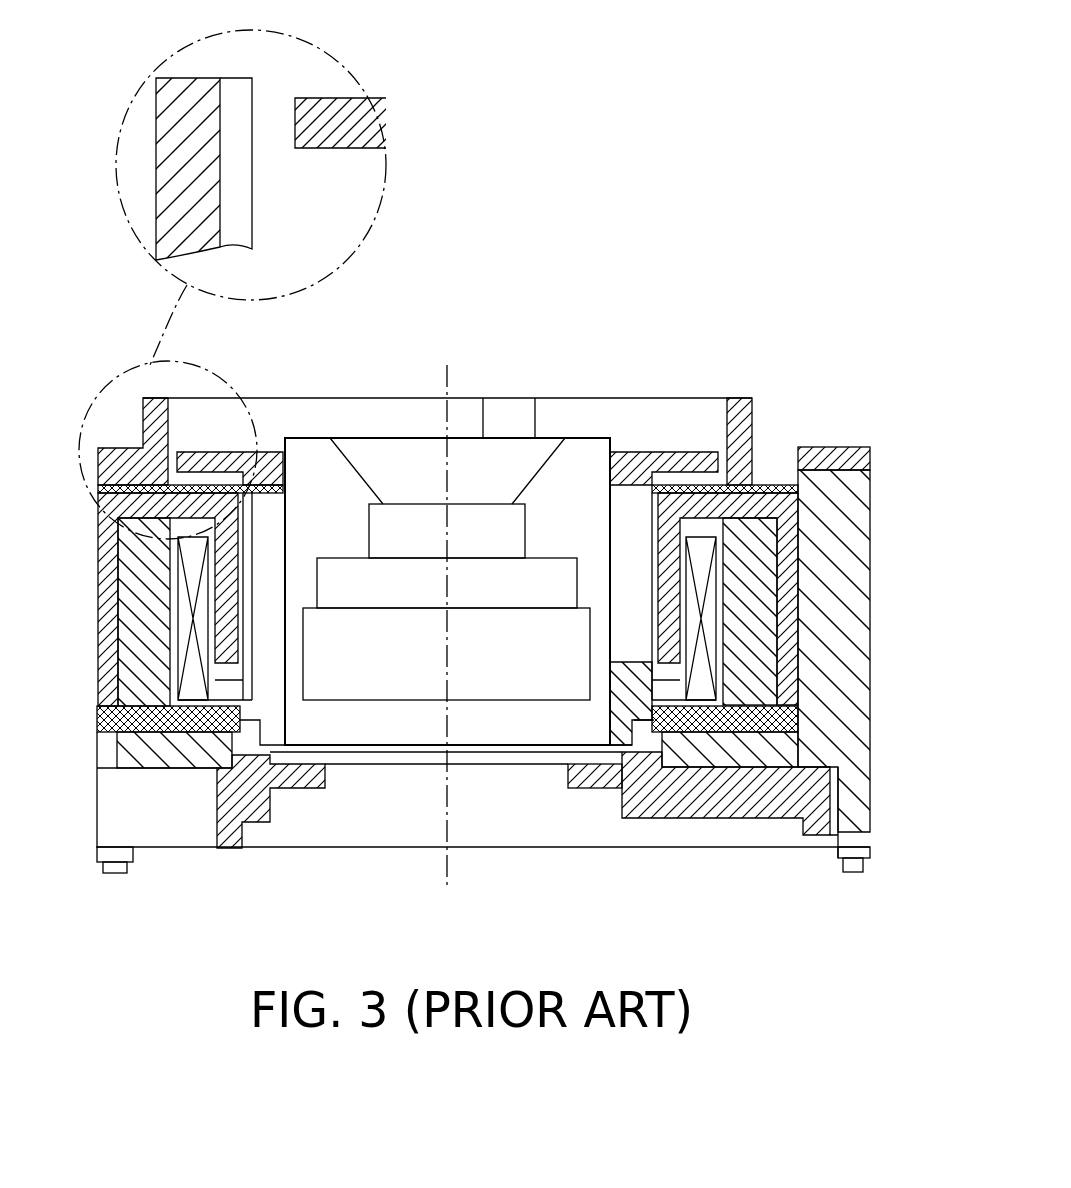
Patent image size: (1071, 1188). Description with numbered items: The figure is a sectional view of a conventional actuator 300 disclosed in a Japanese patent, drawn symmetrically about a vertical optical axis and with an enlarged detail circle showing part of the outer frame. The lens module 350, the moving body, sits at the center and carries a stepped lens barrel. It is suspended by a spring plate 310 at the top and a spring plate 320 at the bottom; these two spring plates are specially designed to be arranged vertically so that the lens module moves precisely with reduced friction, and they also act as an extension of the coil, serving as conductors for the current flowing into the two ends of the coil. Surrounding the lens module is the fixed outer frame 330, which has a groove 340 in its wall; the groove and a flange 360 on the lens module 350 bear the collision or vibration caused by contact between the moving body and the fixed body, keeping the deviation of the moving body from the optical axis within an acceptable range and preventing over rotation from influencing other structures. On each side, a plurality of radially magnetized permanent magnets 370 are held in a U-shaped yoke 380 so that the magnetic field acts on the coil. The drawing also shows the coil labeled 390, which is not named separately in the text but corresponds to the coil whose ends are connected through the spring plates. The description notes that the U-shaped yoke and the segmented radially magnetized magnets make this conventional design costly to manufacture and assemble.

The actuator 300 is at (850, 950).
The spring plate 310 is at (685, 482).
The spring plate 320 is at (720, 705).
The outer frame 330 is at (172, 147).
The groove 340 is at (243, 103).
The lens module 350 is at (527, 675).
The flange 360 is at (345, 125).
The radially magnetized permanent magnets 370 is at (748, 580).
The U-shaped yoke 380 is at (785, 638).
The coil 390 is at (190, 655).